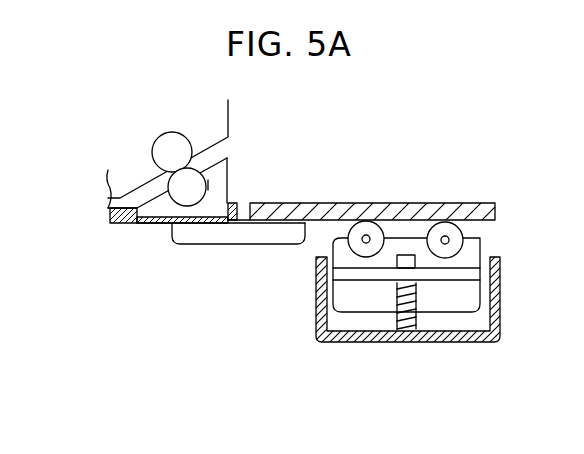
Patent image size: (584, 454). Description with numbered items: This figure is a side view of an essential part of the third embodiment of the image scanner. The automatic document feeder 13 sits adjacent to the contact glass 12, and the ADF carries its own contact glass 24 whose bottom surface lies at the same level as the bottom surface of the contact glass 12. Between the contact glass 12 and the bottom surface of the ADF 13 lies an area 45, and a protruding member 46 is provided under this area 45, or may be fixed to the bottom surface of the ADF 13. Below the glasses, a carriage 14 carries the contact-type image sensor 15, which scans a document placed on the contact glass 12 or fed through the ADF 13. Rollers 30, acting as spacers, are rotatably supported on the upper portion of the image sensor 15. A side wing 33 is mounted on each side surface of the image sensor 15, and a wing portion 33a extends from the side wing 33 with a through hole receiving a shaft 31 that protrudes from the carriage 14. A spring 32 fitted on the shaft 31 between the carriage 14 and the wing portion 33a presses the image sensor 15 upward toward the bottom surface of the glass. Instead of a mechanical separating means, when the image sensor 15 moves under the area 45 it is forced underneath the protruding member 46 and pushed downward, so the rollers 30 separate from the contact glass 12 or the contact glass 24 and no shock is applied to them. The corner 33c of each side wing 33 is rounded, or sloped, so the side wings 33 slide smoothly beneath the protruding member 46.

The automatic document feeder 13 is at (146, 134).
The contact glass of the ADF 24 is at (120, 226).
The protruding member 46 is at (224, 240).
The contact glass 12 is at (433, 201).
The area 45 is at (246, 215).
The rollers 30 is at (372, 222).
The wing portion 33a is at (484, 250).
The corner 33c is at (333, 236).
The carriage 14 is at (492, 288).
The shaft 31 is at (408, 330).
The spring 32 is at (392, 302).
The side wing 33 is at (468, 304).
The contact-type image sensor 15 is at (342, 319).